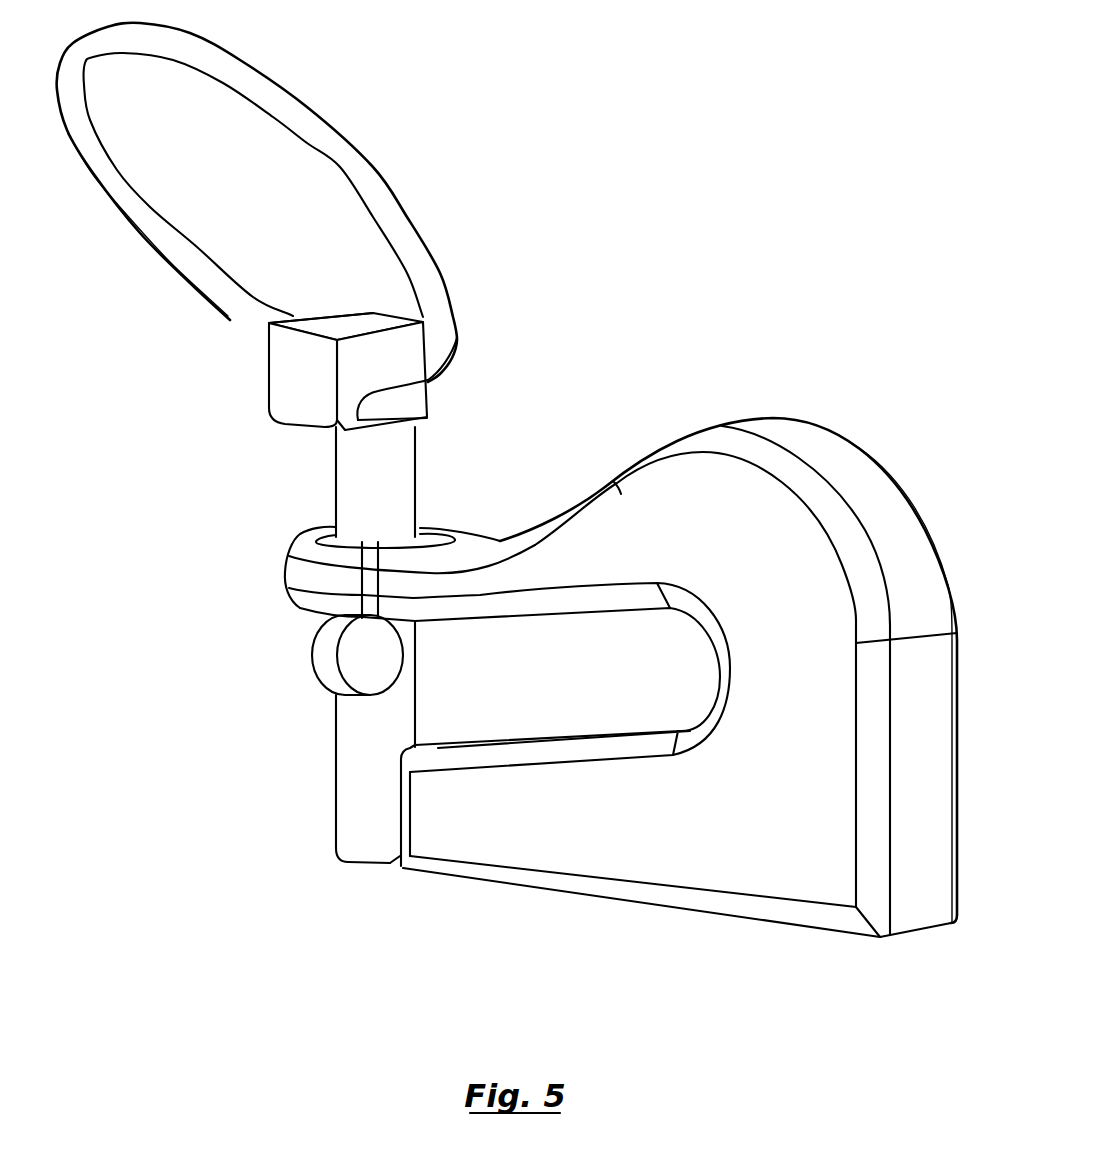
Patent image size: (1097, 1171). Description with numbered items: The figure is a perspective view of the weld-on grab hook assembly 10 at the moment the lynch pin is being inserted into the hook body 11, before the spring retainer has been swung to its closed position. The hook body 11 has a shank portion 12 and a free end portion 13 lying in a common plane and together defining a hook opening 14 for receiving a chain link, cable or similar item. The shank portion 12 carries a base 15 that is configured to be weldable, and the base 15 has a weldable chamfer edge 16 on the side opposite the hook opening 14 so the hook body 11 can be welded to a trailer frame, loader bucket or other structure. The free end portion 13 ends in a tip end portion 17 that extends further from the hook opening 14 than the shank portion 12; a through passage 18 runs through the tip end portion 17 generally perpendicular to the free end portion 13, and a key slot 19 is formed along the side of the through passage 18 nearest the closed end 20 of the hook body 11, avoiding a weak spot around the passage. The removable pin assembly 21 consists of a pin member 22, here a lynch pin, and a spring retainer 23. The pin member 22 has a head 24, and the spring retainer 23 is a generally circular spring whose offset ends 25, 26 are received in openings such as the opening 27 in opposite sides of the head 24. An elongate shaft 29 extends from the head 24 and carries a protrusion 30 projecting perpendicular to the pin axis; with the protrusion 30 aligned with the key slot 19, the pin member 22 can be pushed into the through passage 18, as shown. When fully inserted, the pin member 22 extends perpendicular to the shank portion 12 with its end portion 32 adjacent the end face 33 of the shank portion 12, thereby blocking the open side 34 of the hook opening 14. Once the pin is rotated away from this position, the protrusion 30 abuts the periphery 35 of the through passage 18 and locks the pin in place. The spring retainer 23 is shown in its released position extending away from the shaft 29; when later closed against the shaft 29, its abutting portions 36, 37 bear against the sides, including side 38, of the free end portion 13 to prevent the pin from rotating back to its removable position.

The hook assembly 10 is at (713, 270).
The hook body 11 is at (785, 433).
The shank portion 12 is at (623, 900).
The free end portion 13 is at (572, 547).
The hook opening 14 is at (509, 677).
The base 15 is at (540, 840).
The weldable chamfer edge 16 is at (757, 907).
The tip end portion 17 is at (291, 583).
The through passage 18 is at (420, 533).
The key slot 19 is at (437, 533).
The closed end 20 is at (813, 605).
The removable pin assembly 21 is at (263, 398).
The pin member 22 is at (343, 755).
The spring retainer 23 is at (437, 258).
The head 24 is at (280, 365).
The offset end 25 is at (387, 403).
The offset end 26 is at (290, 310).
The opening 27 is at (380, 390).
The elongate shaft 29 is at (325, 800).
The protrusion 30 is at (320, 663).
The end portion 32 is at (372, 818).
The end face 33 is at (397, 823).
The open side 34 is at (425, 705).
The periphery 35 is at (320, 530).
The abutting portion 36 is at (348, 178).
The abutting portion 37 is at (130, 245).
The side 38 is at (535, 565).